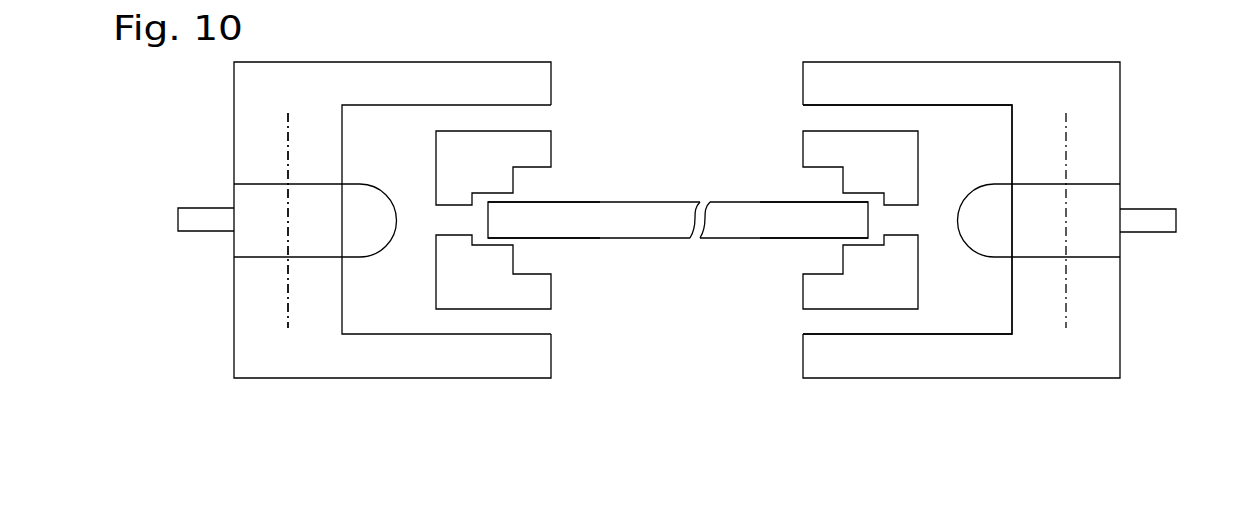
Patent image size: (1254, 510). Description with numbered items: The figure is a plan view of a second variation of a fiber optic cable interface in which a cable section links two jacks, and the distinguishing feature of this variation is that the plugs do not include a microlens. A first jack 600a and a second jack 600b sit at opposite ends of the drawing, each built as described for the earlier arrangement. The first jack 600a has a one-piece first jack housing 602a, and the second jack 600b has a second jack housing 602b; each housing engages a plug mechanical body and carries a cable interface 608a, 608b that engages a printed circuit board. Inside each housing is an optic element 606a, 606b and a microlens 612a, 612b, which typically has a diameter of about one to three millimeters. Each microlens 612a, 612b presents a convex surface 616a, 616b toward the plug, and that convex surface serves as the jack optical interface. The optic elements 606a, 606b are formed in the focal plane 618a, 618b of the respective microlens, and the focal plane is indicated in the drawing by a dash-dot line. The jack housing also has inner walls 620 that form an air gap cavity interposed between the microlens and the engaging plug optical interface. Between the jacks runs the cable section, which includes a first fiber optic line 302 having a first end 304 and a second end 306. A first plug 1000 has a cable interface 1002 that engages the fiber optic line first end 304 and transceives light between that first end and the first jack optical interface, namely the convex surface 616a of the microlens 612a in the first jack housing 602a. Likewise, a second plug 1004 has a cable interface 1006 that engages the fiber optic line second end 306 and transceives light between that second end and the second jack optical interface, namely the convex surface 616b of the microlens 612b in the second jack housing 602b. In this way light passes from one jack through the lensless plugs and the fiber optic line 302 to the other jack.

The first fiber optic line 302 is at (745, 202).
The first end 304 is at (548, 232).
The second end 306 is at (841, 232).
The first jack 600a is at (342, 205).
The second jack 600b is at (1004, 200).
The first jack housing 602a is at (315, 98).
The second jack housing 602b is at (1090, 98).
The optic element 606a is at (295, 248).
The optic element 606b is at (1115, 206).
The cable interface 608a is at (210, 208).
The cable interface 608b is at (1134, 208).
The microlens 612a is at (398, 230).
The microlens 612b is at (1010, 230).
The convex surface 616a is at (384, 180).
The convex surface 616b is at (955, 183).
The focal plane 618a is at (288, 295).
The focal plane 618b is at (1066, 323).
The inner walls 620 is at (934, 329).
The first plug 1000 is at (533, 140).
The cable interface 1002 is at (552, 181).
The second plug 1004 is at (829, 140).
The cable interface 1006 is at (810, 255).